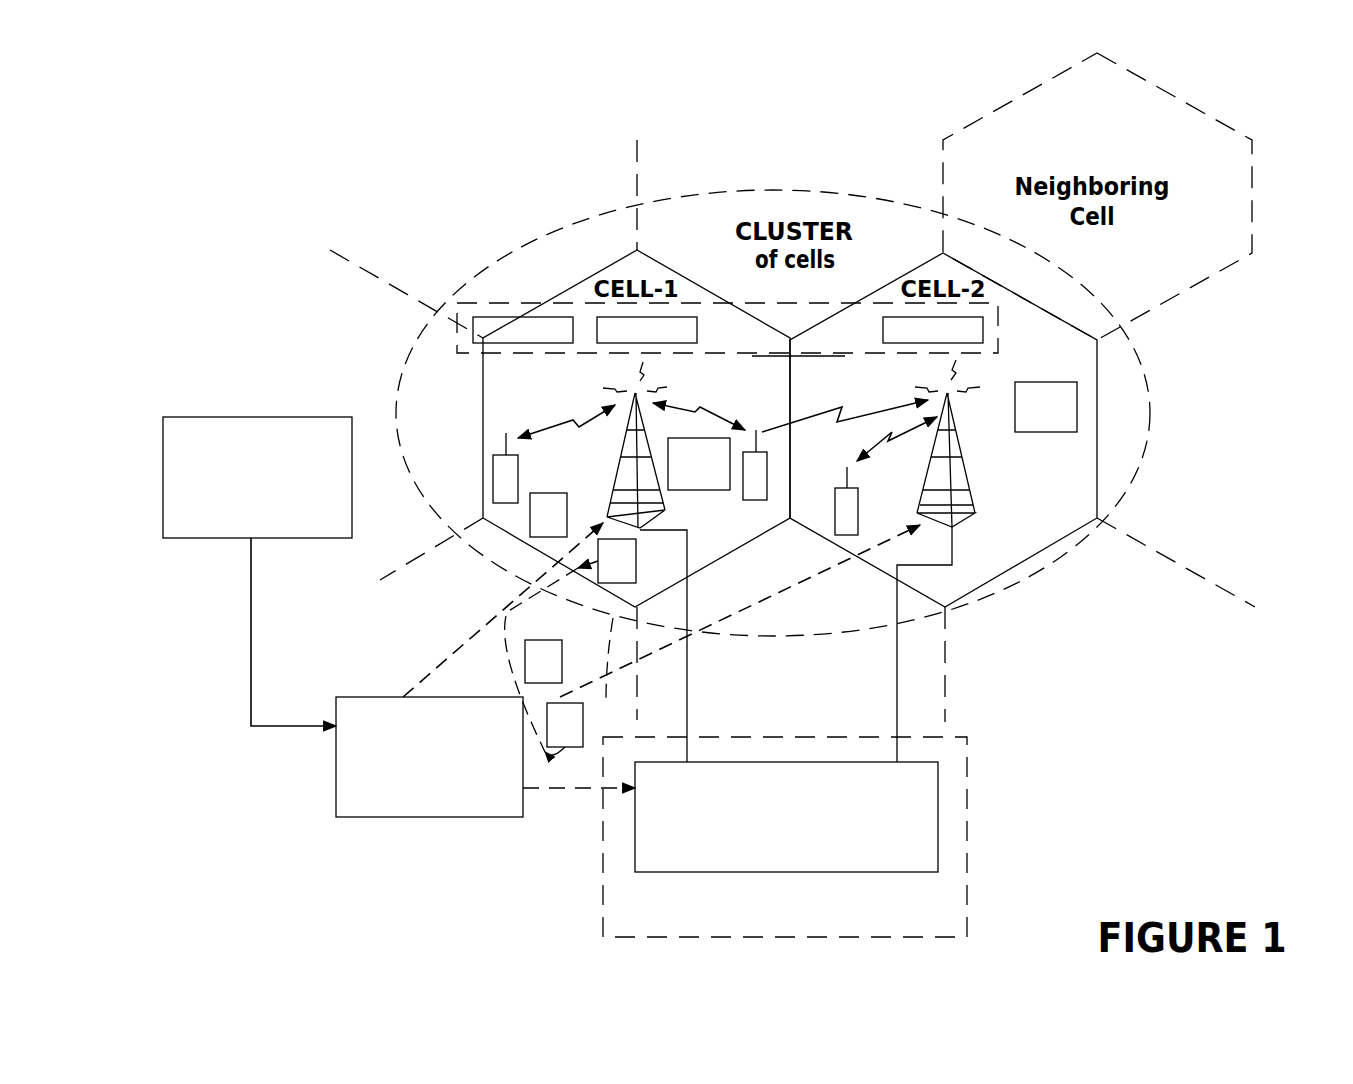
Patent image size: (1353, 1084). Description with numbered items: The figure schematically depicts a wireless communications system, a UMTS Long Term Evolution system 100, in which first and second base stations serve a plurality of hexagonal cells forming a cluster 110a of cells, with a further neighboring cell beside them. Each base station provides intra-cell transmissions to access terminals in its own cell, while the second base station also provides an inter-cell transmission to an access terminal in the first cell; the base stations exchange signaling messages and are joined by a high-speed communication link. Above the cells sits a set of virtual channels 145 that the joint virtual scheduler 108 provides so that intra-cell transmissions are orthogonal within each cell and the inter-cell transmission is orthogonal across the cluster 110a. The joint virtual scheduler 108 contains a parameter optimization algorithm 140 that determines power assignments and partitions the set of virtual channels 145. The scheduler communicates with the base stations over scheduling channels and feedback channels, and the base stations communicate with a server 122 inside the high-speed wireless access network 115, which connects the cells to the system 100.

The UMTS Long Term Evolution system 100 is at (425, 183).
The cluster of cells 110a is at (762, 190).
The set of virtual channels 145 is at (835, 290).
The parameter optimization algorithm 140 is at (163, 438).
The joint virtual scheduler 108 is at (336, 740).
The high-speed wireless access network 115 is at (967, 848).
The server 122 is at (757, 865).